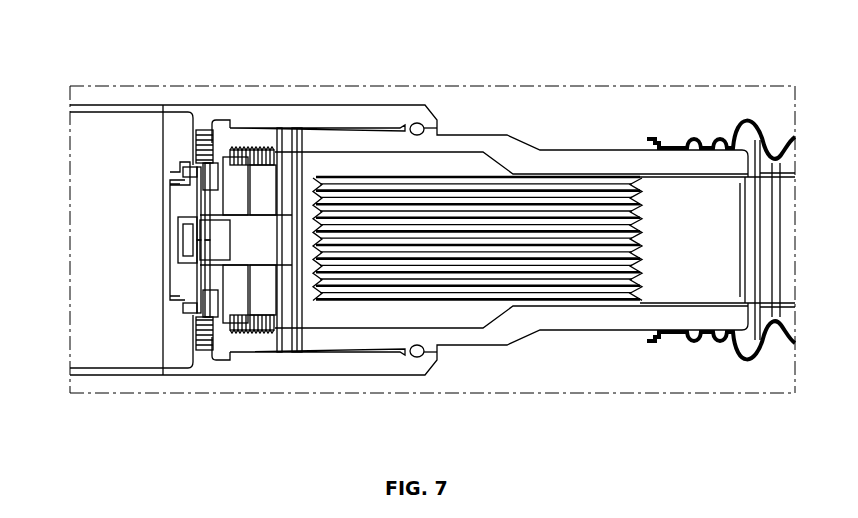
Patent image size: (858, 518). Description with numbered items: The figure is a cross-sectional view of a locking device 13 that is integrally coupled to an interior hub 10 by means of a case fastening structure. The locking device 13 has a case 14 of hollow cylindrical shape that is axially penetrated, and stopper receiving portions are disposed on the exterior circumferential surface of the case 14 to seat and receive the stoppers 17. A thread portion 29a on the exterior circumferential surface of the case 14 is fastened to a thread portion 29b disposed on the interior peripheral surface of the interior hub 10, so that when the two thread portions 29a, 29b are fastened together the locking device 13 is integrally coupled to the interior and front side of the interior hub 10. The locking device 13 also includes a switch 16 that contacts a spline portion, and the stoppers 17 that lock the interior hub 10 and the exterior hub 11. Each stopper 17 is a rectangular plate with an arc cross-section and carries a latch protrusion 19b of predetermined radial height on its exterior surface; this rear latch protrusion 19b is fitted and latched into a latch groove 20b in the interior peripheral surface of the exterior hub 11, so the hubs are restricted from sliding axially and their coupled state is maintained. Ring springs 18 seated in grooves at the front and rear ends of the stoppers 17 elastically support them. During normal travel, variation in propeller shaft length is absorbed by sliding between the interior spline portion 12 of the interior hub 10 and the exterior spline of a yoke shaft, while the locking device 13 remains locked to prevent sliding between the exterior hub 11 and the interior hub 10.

The interior hub 10 is at (493, 146).
The exterior hub 11 is at (412, 122).
The interior spline portion 12 is at (551, 190).
The locking device 13 is at (178, 158).
The case 14 is at (176, 198).
The switch 16 is at (304, 286).
The stopper 17 is at (184, 319).
The ring spring 18 is at (198, 280).
The latch protrusion 19b is at (212, 121).
The latch groove 20b is at (225, 124).
The thread portion 29a is at (244, 160).
The thread portion 29b is at (285, 164).